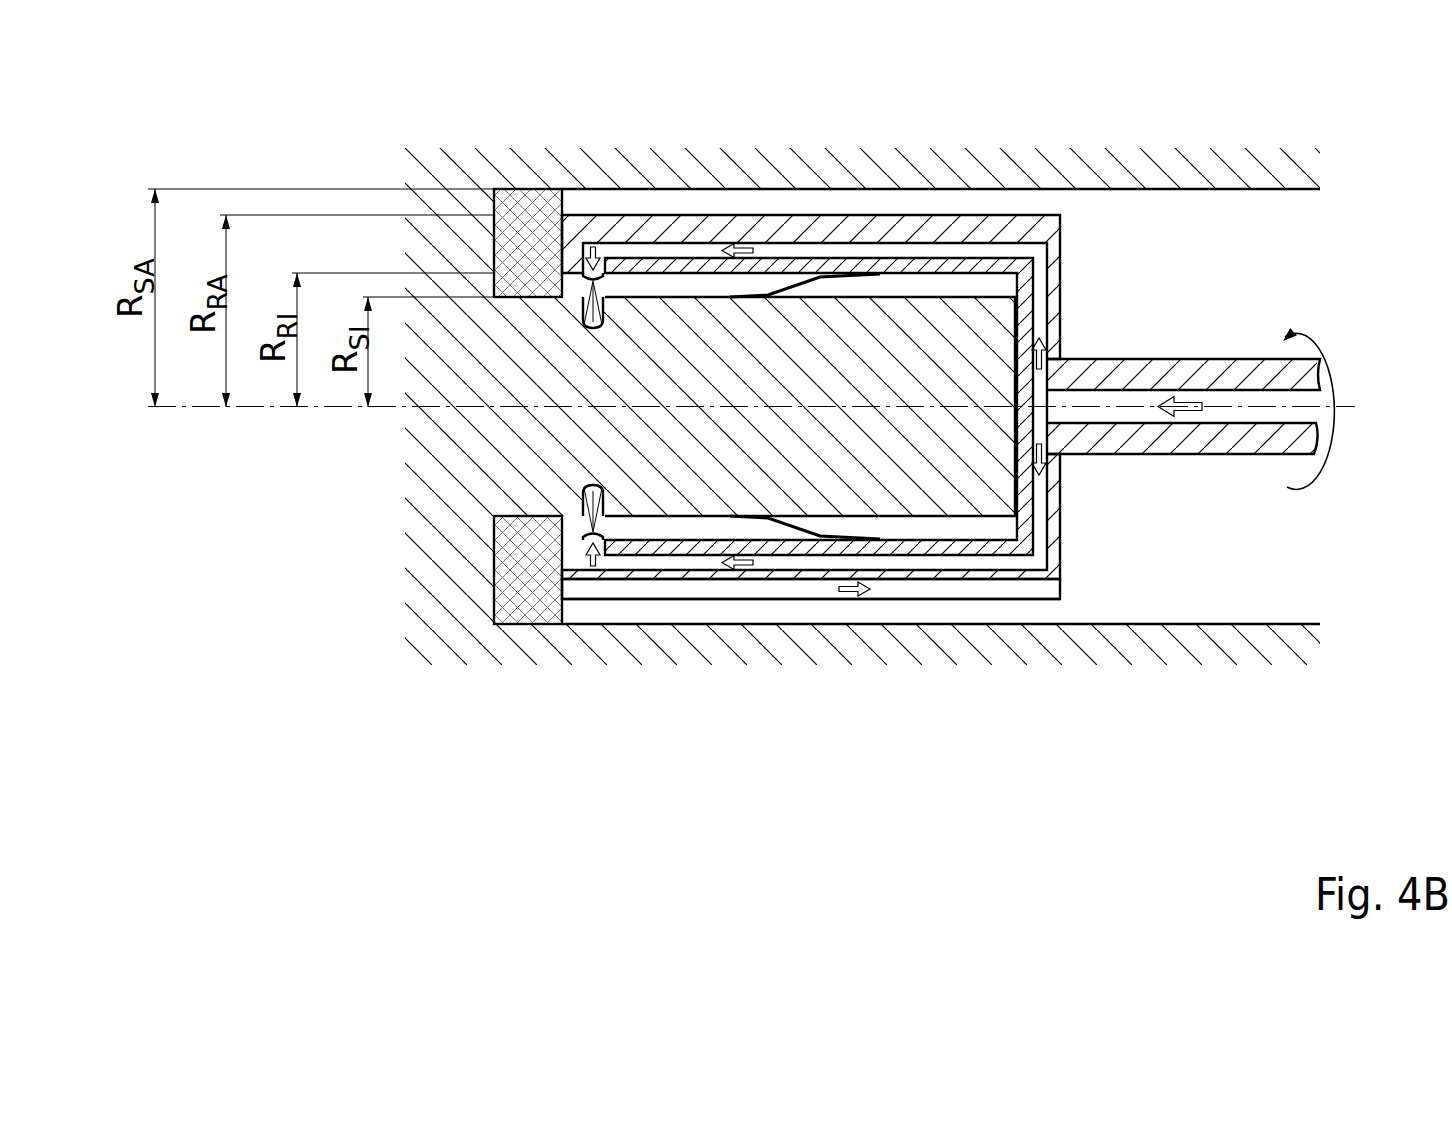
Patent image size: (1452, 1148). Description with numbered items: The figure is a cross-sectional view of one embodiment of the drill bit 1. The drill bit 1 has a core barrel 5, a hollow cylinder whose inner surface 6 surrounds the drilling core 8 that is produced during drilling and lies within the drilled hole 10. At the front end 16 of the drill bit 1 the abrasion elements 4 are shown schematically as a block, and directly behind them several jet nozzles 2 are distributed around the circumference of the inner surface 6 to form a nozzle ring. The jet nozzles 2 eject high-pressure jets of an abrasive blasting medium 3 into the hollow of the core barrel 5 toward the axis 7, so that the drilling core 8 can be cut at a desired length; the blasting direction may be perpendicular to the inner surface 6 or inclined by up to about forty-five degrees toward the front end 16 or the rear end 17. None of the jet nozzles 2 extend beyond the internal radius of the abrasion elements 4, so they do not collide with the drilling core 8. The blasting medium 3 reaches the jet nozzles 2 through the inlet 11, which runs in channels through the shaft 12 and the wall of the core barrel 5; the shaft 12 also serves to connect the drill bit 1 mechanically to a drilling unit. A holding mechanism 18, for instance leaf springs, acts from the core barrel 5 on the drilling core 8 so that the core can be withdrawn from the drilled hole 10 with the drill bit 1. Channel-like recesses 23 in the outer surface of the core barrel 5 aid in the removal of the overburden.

The drill bit 1 is at (1092, 255).
The jet nozzles 2 is at (592, 276).
The blasting medium 3 is at (1185, 403).
The abrasion elements 4 is at (562, 200).
The core barrel 5 is at (840, 242).
The inner surface 6 is at (907, 276).
The axis 7 is at (953, 405).
The drilling core 8 is at (793, 467).
The drilled hole 10 is at (1105, 552).
The inlet 11 is at (982, 560).
The shaft 12 is at (1200, 453).
The front end 16 is at (528, 660).
The rear end 17 is at (1038, 665).
The holding mechanism 18 is at (785, 530).
The channel-like recesses 23 is at (905, 585).